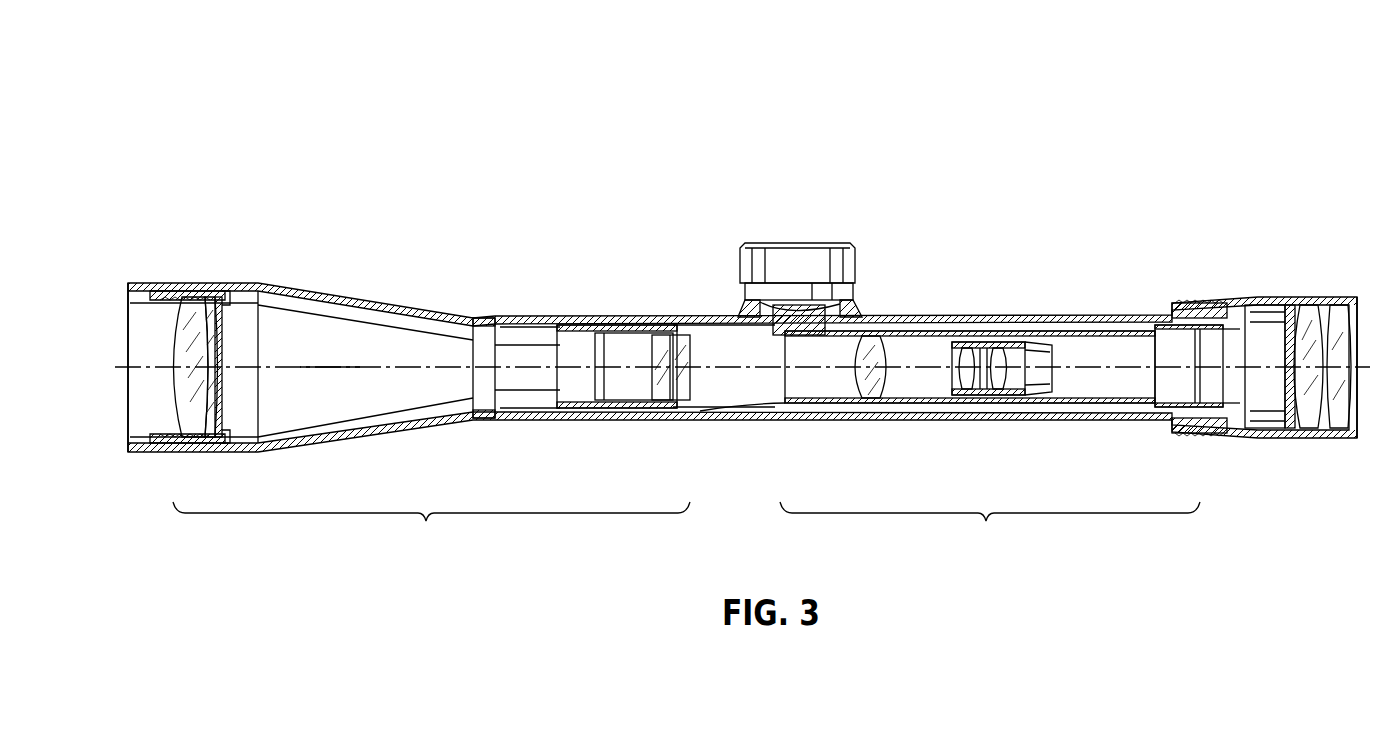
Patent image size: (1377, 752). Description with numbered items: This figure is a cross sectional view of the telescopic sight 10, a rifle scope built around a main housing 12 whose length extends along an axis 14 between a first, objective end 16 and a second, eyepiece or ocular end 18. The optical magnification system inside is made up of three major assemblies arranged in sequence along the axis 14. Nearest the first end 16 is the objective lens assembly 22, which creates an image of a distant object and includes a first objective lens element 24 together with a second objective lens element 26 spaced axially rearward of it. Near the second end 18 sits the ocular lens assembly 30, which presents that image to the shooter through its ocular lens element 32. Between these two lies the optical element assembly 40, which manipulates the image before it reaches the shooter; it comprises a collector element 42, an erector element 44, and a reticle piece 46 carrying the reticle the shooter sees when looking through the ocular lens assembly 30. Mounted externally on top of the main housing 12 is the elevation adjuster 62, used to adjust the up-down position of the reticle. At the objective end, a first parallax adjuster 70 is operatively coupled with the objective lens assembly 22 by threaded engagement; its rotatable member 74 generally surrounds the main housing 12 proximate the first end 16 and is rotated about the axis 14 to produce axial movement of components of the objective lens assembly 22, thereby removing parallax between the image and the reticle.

The telescopic sight 10 is at (905, 108).
The main housing 12 is at (393, 302).
The axis 14 is at (333, 372).
The first end 16 is at (142, 462).
The second end 18 is at (1350, 460).
The objective lens assembly 22 is at (431, 527).
The first objective lens element 24 is at (172, 340).
The second objective lens element 26 is at (688, 385).
The ocular lens assembly 30 is at (1322, 296).
The ocular lens element 32 is at (1285, 338).
The optical element assembly 40 is at (990, 442).
The collector element 42 is at (882, 378).
The erector element 44 is at (955, 355).
The reticle piece 46 is at (1203, 420).
The elevation adjuster 62 is at (795, 248).
The first parallax adjuster 70 is at (202, 284).
The rotatable member 74 is at (183, 446).